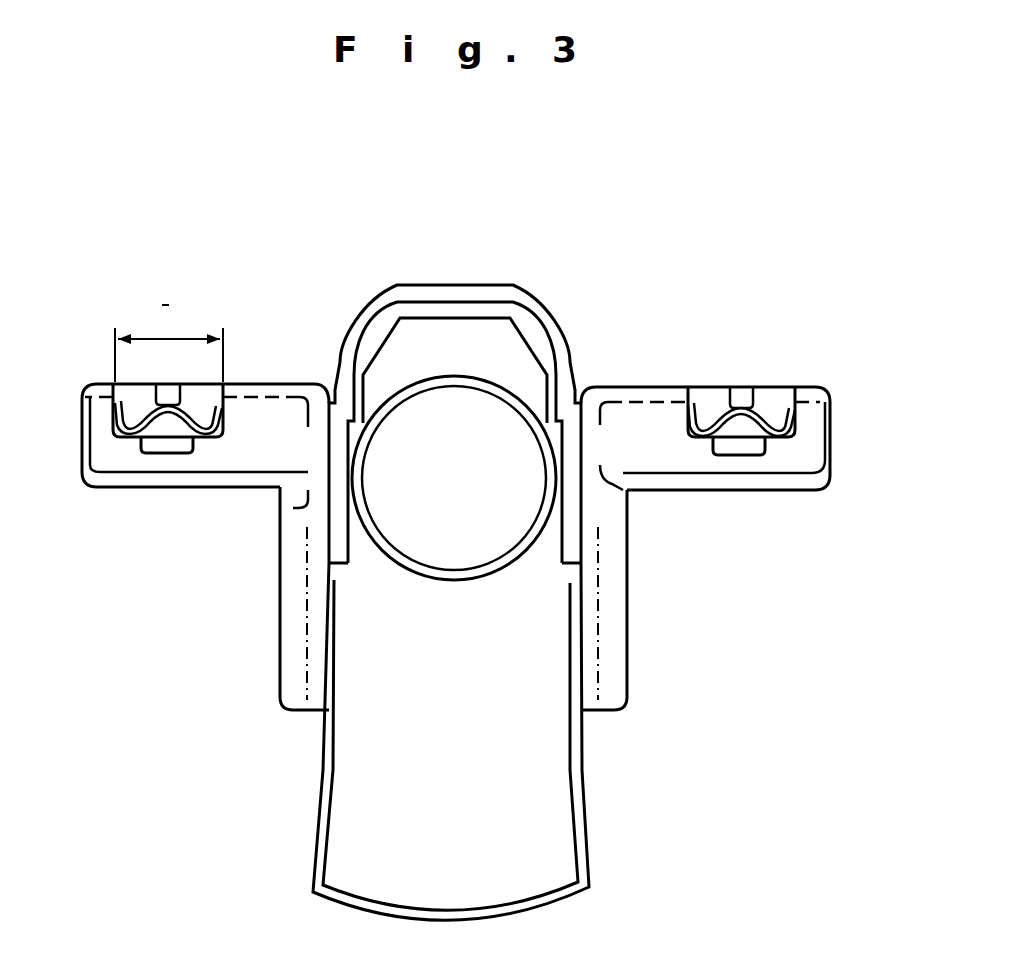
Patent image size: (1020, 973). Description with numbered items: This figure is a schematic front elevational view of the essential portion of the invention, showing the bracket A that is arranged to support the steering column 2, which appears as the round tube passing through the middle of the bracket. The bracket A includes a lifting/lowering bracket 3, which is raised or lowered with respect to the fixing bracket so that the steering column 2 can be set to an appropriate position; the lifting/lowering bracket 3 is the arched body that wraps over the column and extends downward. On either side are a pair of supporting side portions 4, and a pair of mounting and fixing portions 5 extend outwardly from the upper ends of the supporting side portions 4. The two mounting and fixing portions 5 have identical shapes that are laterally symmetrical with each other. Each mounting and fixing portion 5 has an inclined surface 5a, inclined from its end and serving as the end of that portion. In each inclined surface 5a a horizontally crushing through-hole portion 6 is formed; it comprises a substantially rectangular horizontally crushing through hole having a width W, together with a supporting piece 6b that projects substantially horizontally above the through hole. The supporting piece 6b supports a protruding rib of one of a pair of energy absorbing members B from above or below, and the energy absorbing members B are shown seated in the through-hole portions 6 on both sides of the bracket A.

The steering column 2 is at (422, 587).
The lifting/lowering bracket 3 is at (573, 740).
The supporting side portions 4 is at (295, 613).
The mounting and fixing portions 5 is at (296, 372).
The inclined surface 5a is at (230, 466).
The horizontally crushing through-hole portion 6 is at (138, 410).
The supporting piece 6b is at (210, 398).
The width W is at (169, 343).
The bracket A is at (627, 660).
The energy absorbing members B is at (183, 442).